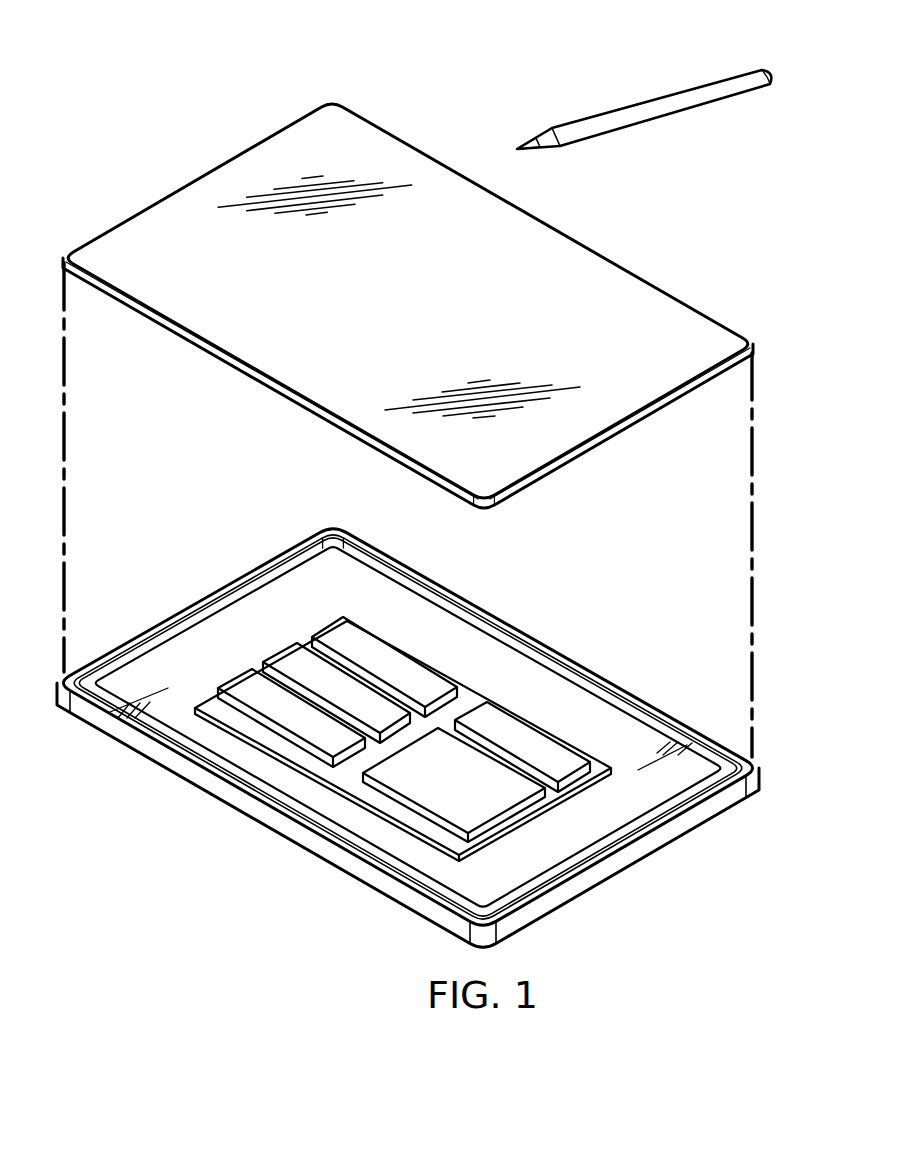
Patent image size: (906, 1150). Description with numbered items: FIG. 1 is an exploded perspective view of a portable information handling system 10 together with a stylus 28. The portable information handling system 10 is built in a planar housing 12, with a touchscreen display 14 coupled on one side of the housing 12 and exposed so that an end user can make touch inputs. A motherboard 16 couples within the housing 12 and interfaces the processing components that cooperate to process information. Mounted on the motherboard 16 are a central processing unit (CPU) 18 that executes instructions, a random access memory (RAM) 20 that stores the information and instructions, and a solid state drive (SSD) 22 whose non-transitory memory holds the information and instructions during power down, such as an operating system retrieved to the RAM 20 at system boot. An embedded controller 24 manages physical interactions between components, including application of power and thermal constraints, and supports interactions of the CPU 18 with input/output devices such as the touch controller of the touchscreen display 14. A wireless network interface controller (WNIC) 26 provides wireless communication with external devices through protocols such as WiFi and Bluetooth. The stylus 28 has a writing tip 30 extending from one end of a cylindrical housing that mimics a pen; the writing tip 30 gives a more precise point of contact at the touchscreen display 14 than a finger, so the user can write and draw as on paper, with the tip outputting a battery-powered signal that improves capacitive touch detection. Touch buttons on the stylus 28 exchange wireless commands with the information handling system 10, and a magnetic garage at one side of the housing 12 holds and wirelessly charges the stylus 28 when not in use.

The portable information handling system 10 is at (172, 126).
The planar housing 12 is at (148, 762).
The touchscreen display 14 is at (433, 353).
The motherboard 16 is at (398, 809).
The central processing unit (CPU) 18 is at (328, 633).
The random access memory (RAM) 20 is at (285, 658).
The solid state drive (SSD) 22 is at (237, 683).
The embedded controller 24 is at (565, 767).
The wireless network interface controller (WNIC) 26 is at (505, 802).
The stylus 28 is at (700, 110).
The writing tip 30 is at (518, 146).